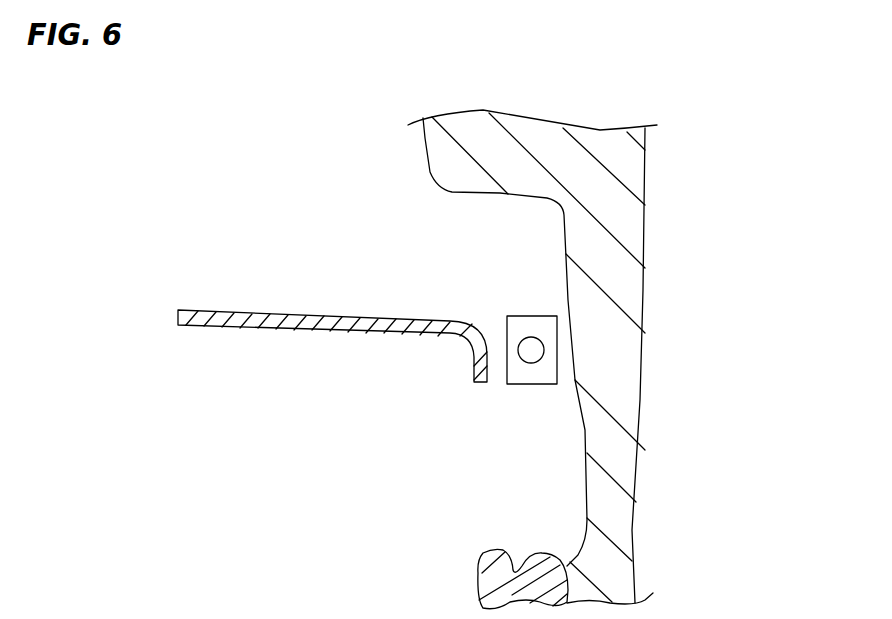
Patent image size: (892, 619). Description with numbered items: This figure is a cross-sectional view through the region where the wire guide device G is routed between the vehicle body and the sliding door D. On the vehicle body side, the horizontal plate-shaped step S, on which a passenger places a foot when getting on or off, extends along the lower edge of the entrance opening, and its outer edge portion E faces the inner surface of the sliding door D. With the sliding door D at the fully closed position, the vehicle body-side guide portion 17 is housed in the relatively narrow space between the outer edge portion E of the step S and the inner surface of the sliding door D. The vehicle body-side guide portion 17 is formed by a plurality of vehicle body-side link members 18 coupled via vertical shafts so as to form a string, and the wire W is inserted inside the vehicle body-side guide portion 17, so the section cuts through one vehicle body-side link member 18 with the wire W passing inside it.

The vehicle body-side guide portion 17 is at (547, 294).
The vehicle body-side link member 18 is at (557, 362).
The wire W is at (542, 340).
The sliding door D is at (635, 245).
The step S is at (337, 298).
The outer edge portion E is at (487, 363).
The wire guide device G is at (140, 200).